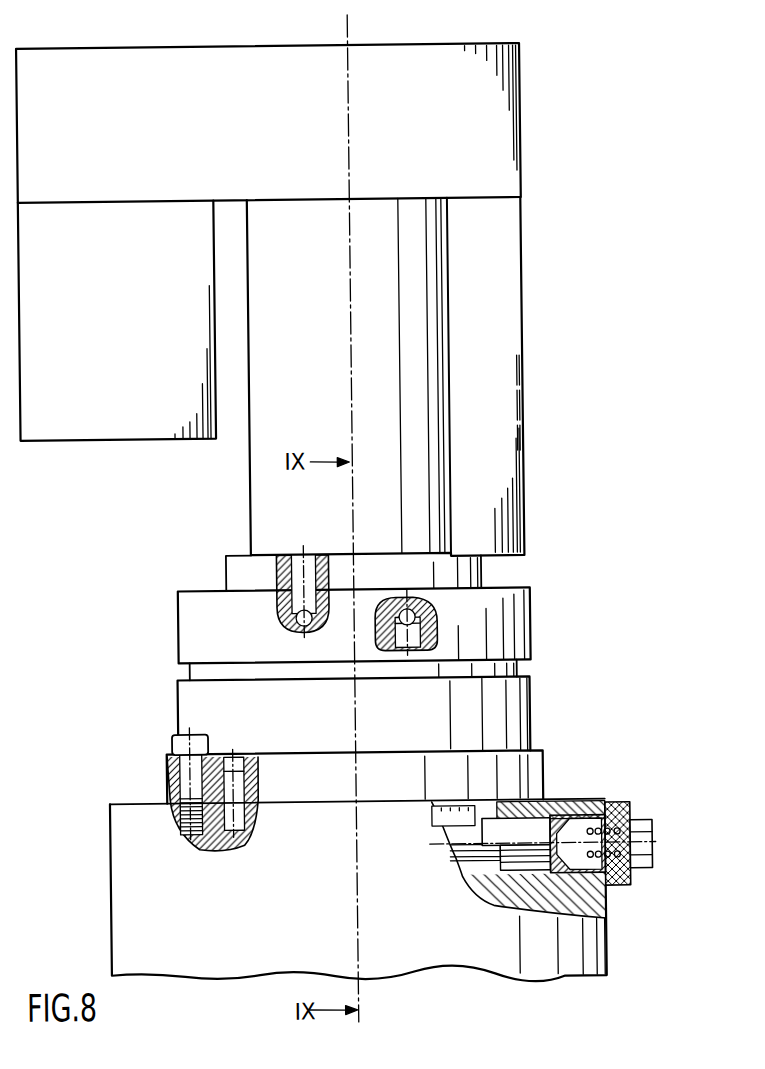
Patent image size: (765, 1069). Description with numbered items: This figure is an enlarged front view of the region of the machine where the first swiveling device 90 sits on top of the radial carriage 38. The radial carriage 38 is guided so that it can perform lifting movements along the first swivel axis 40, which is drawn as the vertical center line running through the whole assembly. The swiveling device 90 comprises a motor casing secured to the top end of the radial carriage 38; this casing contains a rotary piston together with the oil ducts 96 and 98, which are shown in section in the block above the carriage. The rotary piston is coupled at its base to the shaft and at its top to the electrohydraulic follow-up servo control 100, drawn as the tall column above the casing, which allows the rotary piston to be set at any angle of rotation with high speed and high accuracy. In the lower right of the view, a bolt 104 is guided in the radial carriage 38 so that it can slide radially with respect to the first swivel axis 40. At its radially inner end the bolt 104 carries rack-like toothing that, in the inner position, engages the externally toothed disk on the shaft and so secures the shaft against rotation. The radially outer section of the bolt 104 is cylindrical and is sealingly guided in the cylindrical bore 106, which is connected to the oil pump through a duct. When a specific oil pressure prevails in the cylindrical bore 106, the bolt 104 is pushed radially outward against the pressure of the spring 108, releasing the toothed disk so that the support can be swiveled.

The radial carriage 38 is at (457, 956).
The first swivel axis 40 is at (341, 28).
The first swiveling device 90 is at (556, 677).
The oil duct 96 is at (294, 574).
The oil duct 98 is at (409, 634).
The electrohydraulic follow-up servo control 100 is at (438, 314).
The bolt 104 is at (516, 827).
The cylindrical bore 106 is at (557, 807).
The spring 108 is at (608, 888).